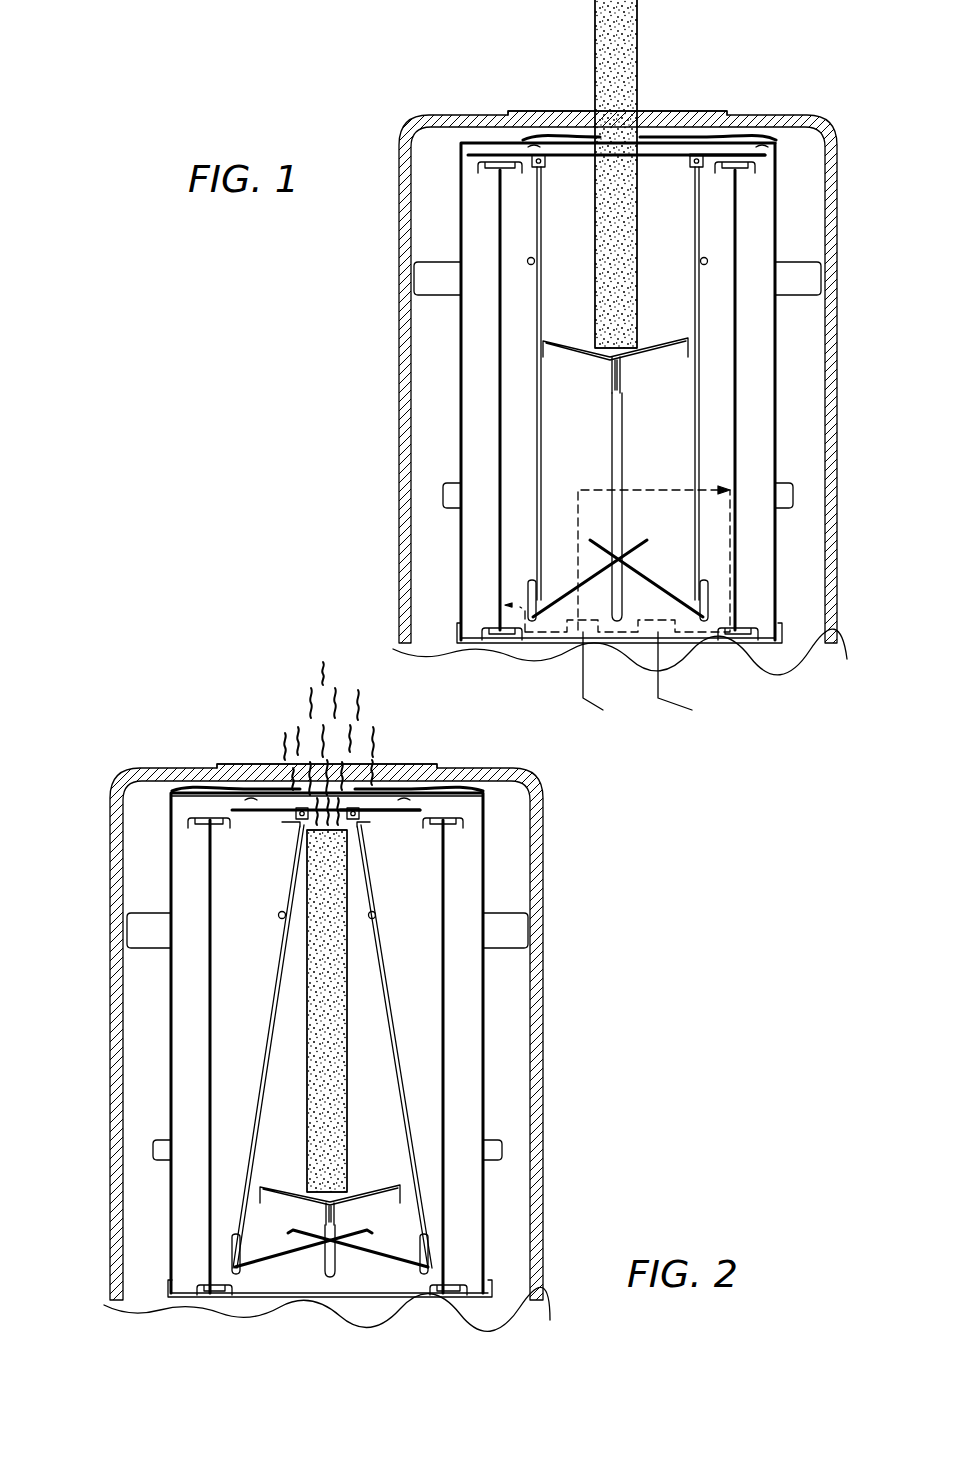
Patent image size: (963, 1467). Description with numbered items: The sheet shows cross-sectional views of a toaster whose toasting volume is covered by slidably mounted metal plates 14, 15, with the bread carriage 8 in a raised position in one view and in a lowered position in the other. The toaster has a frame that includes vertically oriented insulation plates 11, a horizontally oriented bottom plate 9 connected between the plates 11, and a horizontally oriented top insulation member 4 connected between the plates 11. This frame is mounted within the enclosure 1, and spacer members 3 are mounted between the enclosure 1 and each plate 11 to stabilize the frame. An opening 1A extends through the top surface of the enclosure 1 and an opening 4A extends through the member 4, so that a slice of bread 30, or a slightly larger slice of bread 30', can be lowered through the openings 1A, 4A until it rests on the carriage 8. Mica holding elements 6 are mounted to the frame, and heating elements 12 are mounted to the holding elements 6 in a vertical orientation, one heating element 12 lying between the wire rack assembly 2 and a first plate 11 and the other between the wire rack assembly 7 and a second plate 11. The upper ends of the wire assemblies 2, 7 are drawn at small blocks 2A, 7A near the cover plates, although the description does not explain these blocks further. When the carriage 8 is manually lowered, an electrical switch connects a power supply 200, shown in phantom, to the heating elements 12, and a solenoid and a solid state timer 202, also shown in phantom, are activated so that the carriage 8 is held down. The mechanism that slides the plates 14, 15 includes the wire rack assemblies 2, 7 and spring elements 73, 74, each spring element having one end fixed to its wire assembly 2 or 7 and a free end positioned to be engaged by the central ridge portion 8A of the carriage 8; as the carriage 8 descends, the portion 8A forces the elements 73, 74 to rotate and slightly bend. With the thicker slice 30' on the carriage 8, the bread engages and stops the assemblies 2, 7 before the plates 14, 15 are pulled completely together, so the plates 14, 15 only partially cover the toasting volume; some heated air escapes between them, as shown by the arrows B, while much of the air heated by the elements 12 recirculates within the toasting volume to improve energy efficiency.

In FIG. 1, the enclosure 1 is at (403, 496).
In FIG. 2, the enclosure 1 is at (118, 1138).
In FIG. 1, the opening 1A is at (512, 114).
In FIG. 2, the opening 1A is at (233, 767).
In FIG. 1, the wire rack assembly 2 is at (532, 182).
In FIG. 2, the wire rack assembly 2 is at (275, 988).
In FIG. 1, the left leg pivot block 2A is at (540, 168).
In FIG. 2, the left leg pivot block 2A is at (297, 825).
In FIG. 1, the spacer member 3 is at (430, 296).
In FIG. 2, the spacer member 3 is at (137, 923).
In FIG. 1, the top insulation member 4 is at (531, 135).
In FIG. 2, the top insulation member 4 is at (218, 792).
In FIG. 1, the opening 4A is at (538, 148).
In FIG. 2, the opening 4A is at (250, 803).
In FIG. 1, the mica holding element 6 is at (478, 165).
In FIG. 2, the mica holding element 6 is at (190, 818).
In FIG. 1, the wire rack assembly 7 is at (695, 210).
In FIG. 2, the wire rack assembly 7 is at (392, 1068).
In FIG. 1, the right leg pivot block 7A is at (692, 168).
In FIG. 2, the right leg pivot block 7A is at (367, 825).
In FIG. 1, the bread carriage 8 is at (652, 345).
In FIG. 2, the bread carriage 8 is at (363, 1187).
In FIG. 1, the central ridge portion 8A is at (620, 378).
In FIG. 2, the central ridge portion 8A is at (334, 1219).
In FIG. 1, the bottom plate 9 is at (545, 643).
In FIG. 2, the bottom plate 9 is at (400, 1300).
In FIG. 1, the insulation plate 11 is at (460, 238).
In FIG. 2, the insulation plate 11 is at (172, 1040).
In FIG. 1, the heating element 12 is at (493, 215).
In FIG. 2, the heating element 12 is at (205, 890).
In FIG. 1, the metal plate 14 is at (487, 156).
In FIG. 2, the metal plate 14 is at (287, 808).
In FIG. 1, the metal plate 15 is at (720, 152).
In FIG. 2, the metal plate 15 is at (387, 807).
In FIG. 1, the slice of bread 30 is at (649, 174).
In FIG. 2, the slice of bread 30' is at (369, 1011).
In FIG. 1, the spring element 73 is at (647, 540).
In FIG. 2, the spring element 73 is at (267, 1261).
In FIG. 1, the spring element 74 is at (641, 569).
In FIG. 2, the spring element 74 is at (395, 1263).
In FIG. 1, the power supply 200 is at (617, 639).
In FIG. 1, the timer 202 is at (723, 699).
In FIG. 2, the arrows B is at (318, 670).